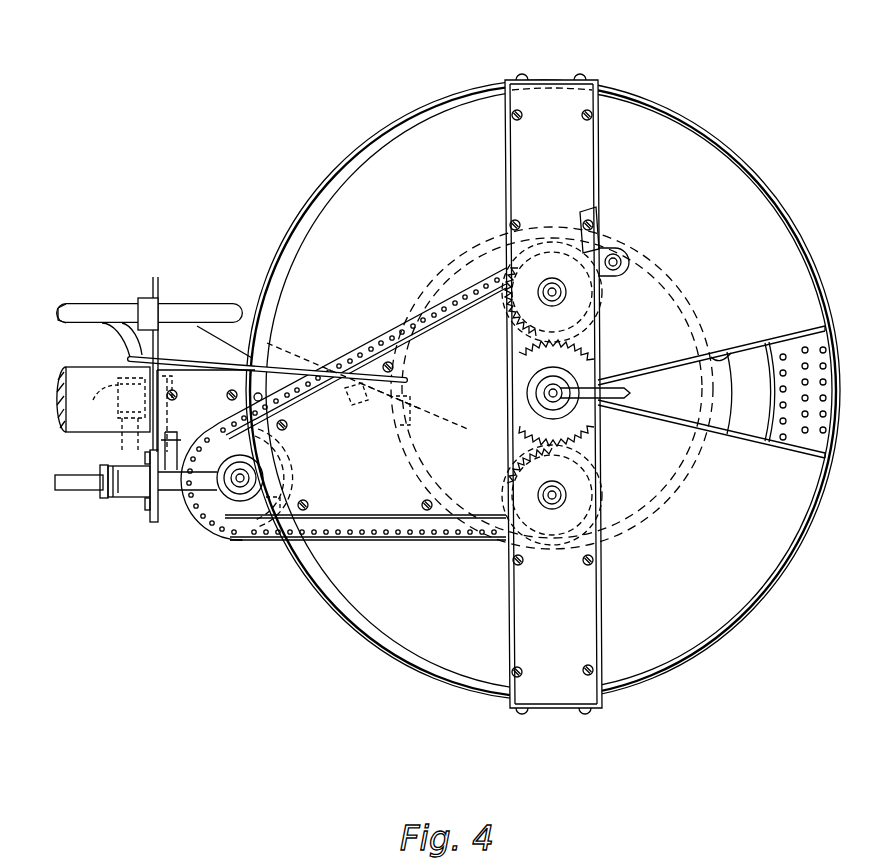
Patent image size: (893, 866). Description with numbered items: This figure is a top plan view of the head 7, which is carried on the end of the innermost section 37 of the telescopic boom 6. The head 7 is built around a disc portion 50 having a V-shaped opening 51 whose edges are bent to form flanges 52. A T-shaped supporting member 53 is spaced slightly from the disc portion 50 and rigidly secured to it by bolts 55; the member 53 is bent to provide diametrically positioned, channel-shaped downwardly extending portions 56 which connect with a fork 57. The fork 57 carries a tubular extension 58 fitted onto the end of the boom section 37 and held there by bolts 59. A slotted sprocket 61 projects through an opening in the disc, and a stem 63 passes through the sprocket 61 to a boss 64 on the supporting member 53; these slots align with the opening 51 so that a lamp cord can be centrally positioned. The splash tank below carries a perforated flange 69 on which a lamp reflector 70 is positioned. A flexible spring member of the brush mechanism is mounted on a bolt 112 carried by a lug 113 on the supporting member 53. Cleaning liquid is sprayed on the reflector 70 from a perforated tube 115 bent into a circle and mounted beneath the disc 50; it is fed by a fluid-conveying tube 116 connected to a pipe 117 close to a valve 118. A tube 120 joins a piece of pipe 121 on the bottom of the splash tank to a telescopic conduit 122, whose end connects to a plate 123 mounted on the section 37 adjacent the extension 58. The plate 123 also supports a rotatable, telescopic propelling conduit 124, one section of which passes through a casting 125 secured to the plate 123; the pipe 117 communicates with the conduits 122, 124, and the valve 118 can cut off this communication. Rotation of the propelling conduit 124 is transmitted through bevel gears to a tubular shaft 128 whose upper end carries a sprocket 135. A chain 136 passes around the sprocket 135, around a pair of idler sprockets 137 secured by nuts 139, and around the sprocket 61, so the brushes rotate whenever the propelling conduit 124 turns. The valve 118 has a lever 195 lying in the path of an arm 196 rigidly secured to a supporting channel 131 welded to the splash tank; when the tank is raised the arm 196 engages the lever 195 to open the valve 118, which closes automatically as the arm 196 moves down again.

The boom 6 is at (76, 438).
The head 7 is at (729, 639).
The boom section 37 is at (64, 390).
The disc portion 50 is at (392, 176).
The V-shaped opening 51 is at (736, 350).
The flanges 52 is at (656, 378).
The T-shaped supporting member 53 is at (568, 605).
The bolts 55 is at (310, 503).
The downwardly extending portions 56 is at (559, 88).
The fork 57 is at (356, 641).
The tubular extension 58 is at (206, 411).
The bolts 59 is at (227, 396).
The sprocket 61 is at (600, 421).
The stem 63 is at (556, 382).
The boss 64 is at (631, 393).
The perforated flange 69 is at (795, 432).
The lamp reflector 70 is at (673, 420).
The bolt 112 is at (626, 262).
The lug 113 is at (598, 240).
The perforated tube 115 is at (682, 296).
The fluid-conveying tube 116 is at (316, 373).
The pipe 117 is at (124, 338).
The valve 118 is at (108, 399).
The tube 120 is at (412, 411).
The piece of pipe 121 is at (349, 405).
The telescopic conduit 122 is at (84, 302).
The plate 123 is at (160, 287).
The propelling conduit 124 is at (78, 492).
The casting 125 is at (145, 482).
The tubular shaft 128 is at (252, 470).
The supporting channel 131 is at (298, 468).
The sprocket 135 is at (213, 508).
The chain 136 is at (394, 334).
The idler sprockets 137 is at (528, 321).
The nuts 139 is at (561, 292).
The lever 195 is at (172, 433).
The arm 196 is at (176, 447).